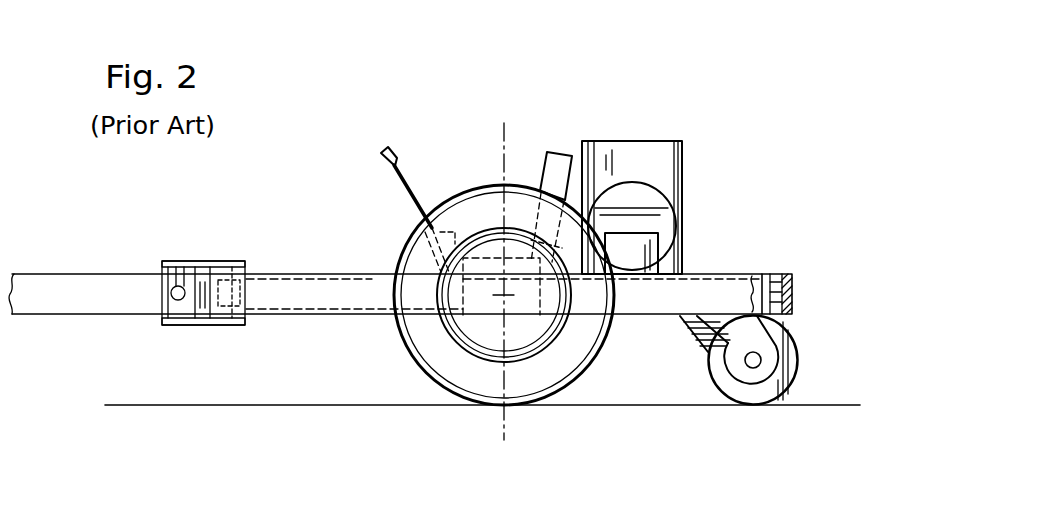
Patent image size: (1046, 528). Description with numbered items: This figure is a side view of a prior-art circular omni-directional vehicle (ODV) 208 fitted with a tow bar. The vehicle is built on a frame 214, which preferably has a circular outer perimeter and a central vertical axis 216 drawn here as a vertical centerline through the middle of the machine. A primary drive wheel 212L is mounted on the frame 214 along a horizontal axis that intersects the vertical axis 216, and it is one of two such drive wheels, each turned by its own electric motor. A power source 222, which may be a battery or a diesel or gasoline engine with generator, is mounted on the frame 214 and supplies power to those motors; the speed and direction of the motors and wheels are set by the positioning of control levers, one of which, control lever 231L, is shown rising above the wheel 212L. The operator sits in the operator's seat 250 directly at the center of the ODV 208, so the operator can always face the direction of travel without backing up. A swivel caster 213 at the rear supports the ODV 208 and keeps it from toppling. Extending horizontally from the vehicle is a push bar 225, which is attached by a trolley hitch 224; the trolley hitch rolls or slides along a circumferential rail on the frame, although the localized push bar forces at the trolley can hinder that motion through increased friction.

The omni-directional vehicle 208 is at (736, 193).
The primary drive wheel 212L is at (421, 338).
The swivel caster 213 is at (798, 352).
The frame 214 is at (759, 273).
The central vertical axis 216 is at (503, 138).
The power source 222 is at (684, 160).
The trolley hitch 224 is at (190, 262).
The push bar 225 is at (66, 316).
The control lever 231L is at (390, 169).
The operator's seat 250 is at (558, 150).